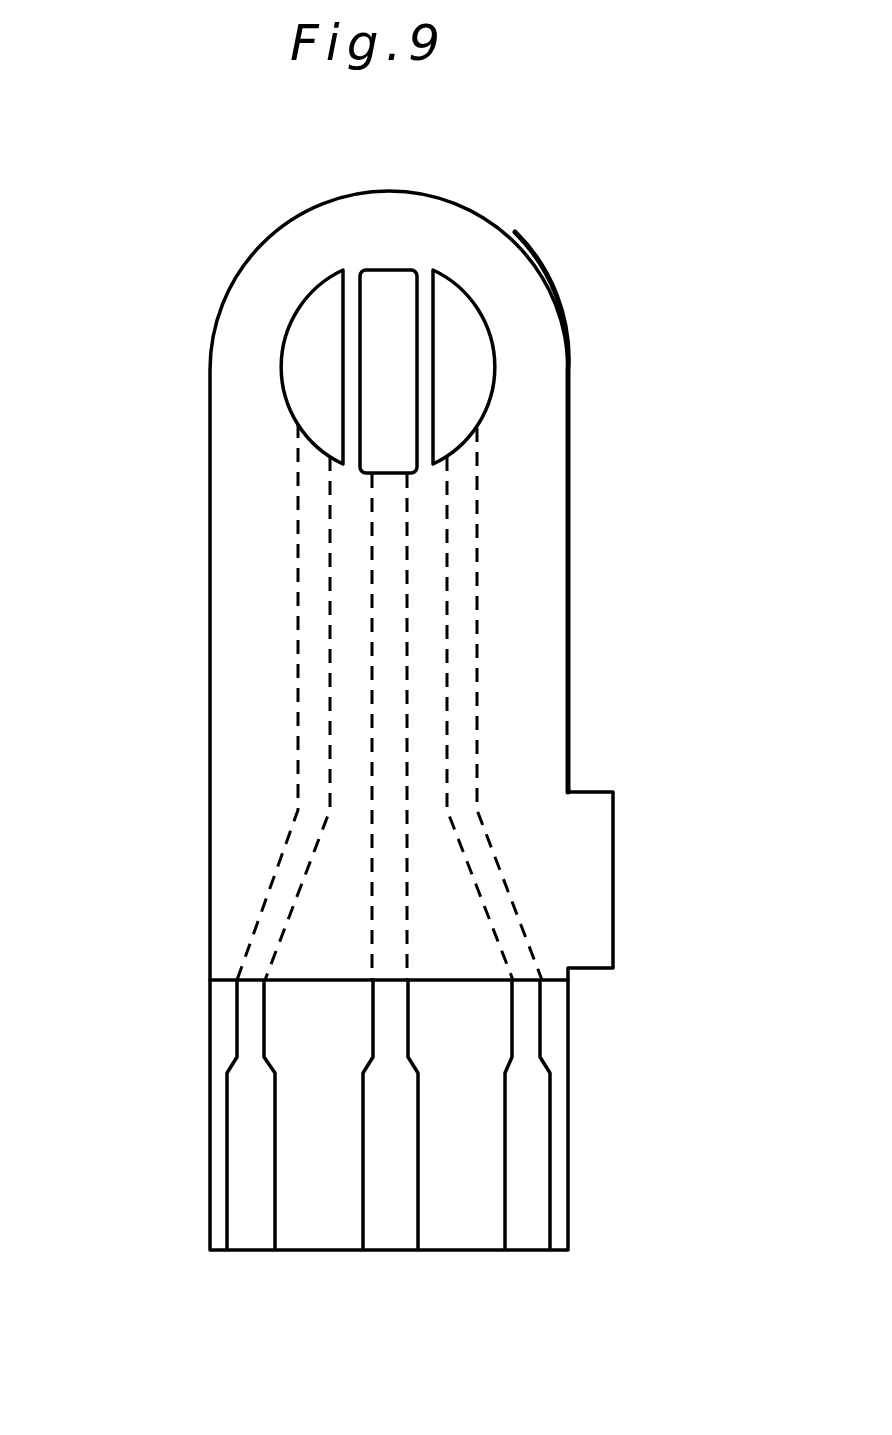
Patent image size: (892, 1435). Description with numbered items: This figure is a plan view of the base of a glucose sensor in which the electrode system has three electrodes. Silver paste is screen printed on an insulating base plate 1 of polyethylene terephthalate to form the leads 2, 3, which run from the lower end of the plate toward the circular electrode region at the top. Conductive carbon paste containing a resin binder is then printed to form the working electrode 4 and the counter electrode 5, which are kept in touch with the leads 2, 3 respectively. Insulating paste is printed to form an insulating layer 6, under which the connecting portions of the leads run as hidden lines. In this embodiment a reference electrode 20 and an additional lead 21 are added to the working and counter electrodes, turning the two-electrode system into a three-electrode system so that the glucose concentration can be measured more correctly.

The insulating base plate 1 is at (460, 1050).
The lead 2 is at (389, 1180).
The lead 3 is at (528, 1180).
The working electrode 4 is at (390, 333).
The counter electrode 5 is at (452, 343).
The insulating layer 6 is at (408, 697).
The reference electrode 20 is at (317, 370).
The lead 21 is at (253, 1178).